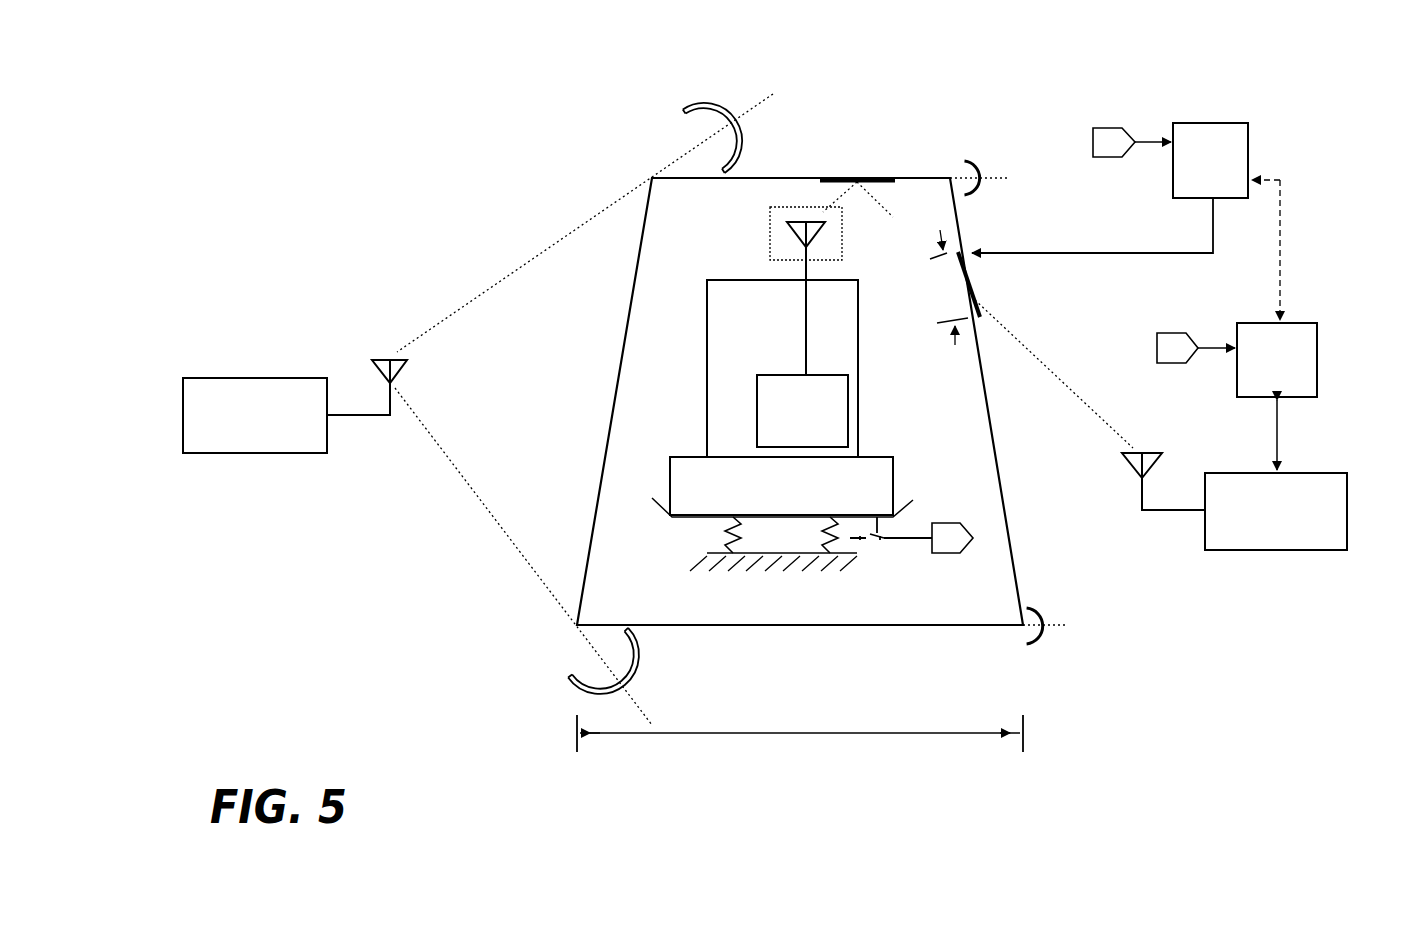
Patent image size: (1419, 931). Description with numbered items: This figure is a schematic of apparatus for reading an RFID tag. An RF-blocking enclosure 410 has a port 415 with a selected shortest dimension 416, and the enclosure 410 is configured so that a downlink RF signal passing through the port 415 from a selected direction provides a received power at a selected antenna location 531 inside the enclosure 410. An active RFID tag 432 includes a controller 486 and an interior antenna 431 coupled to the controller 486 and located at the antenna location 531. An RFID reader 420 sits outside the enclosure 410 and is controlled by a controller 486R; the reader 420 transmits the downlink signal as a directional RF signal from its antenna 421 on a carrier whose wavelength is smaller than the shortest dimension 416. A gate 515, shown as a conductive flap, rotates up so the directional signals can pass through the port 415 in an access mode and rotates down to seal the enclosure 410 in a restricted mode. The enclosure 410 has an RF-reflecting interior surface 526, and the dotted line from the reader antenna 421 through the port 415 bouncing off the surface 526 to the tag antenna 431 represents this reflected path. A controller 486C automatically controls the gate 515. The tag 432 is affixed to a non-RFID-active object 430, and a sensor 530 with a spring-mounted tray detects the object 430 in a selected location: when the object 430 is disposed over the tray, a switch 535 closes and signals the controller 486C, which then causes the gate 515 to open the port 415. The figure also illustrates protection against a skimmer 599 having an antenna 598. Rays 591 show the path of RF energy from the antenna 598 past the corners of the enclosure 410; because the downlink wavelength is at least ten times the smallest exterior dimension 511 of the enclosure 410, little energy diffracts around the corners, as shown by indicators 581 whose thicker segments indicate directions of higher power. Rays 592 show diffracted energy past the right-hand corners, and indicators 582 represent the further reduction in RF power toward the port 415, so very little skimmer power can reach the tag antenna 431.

The RF-blocking enclosure 410 is at (625, 332).
The RF-reflecting interior surface 526 is at (849, 178).
The selected antenna location 531 is at (770, 240).
The interior antenna 431 is at (818, 238).
The active RFID tag 432 is at (707, 440).
The controller 486 is at (764, 375).
The non-RFID-active object 430 is at (893, 475).
The sensor 530 is at (680, 541).
The switch 535 is at (880, 548).
The gate 515 is at (976, 289).
The selected shortest dimension 416 is at (939, 244).
The port 415 is at (927, 306).
The indicators 581 is at (723, 106).
The indicators 582 is at (966, 163).
The rays 592 is at (986, 178).
The rays 591 is at (502, 280).
The antenna 598 is at (375, 360).
The skimmer 599 is at (183, 412).
The smallest exterior dimension 511 is at (945, 735).
The controller 486C is at (1248, 160).
The controller 486R is at (1317, 365).
The RFID reader 420 is at (1347, 505).
The antenna 421 is at (1152, 453).